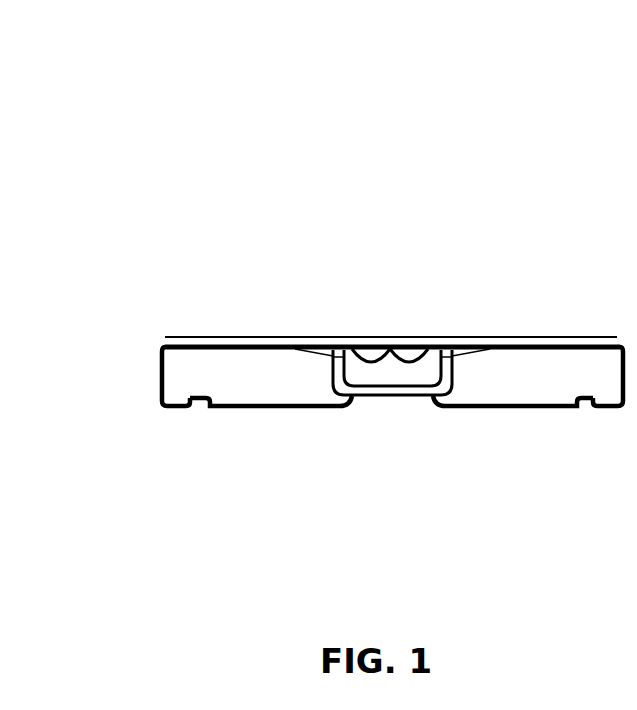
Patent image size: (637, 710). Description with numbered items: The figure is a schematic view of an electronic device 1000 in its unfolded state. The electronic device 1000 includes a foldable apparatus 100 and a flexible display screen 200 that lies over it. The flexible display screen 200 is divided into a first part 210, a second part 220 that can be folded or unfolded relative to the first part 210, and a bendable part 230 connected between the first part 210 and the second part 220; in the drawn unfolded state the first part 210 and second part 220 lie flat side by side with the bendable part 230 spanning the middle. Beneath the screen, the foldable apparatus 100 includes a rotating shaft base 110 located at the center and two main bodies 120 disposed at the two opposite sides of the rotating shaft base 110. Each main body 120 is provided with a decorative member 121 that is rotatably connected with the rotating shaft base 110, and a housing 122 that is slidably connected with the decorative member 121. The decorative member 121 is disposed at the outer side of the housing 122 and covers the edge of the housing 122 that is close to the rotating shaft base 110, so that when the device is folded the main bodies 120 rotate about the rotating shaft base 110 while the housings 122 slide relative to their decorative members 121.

The electronic device 1000 is at (447, 92).
The flexible display screen 200 is at (572, 223).
The first part 210 is at (215, 337).
The second part 220 is at (557, 337).
The bendable part 230 is at (392, 345).
The foldable apparatus 100 is at (402, 553).
The rotating shaft base 110 is at (405, 432).
The main body 120 is at (283, 432).
The decorative member 121 is at (232, 413).
The housing 122 is at (178, 381).